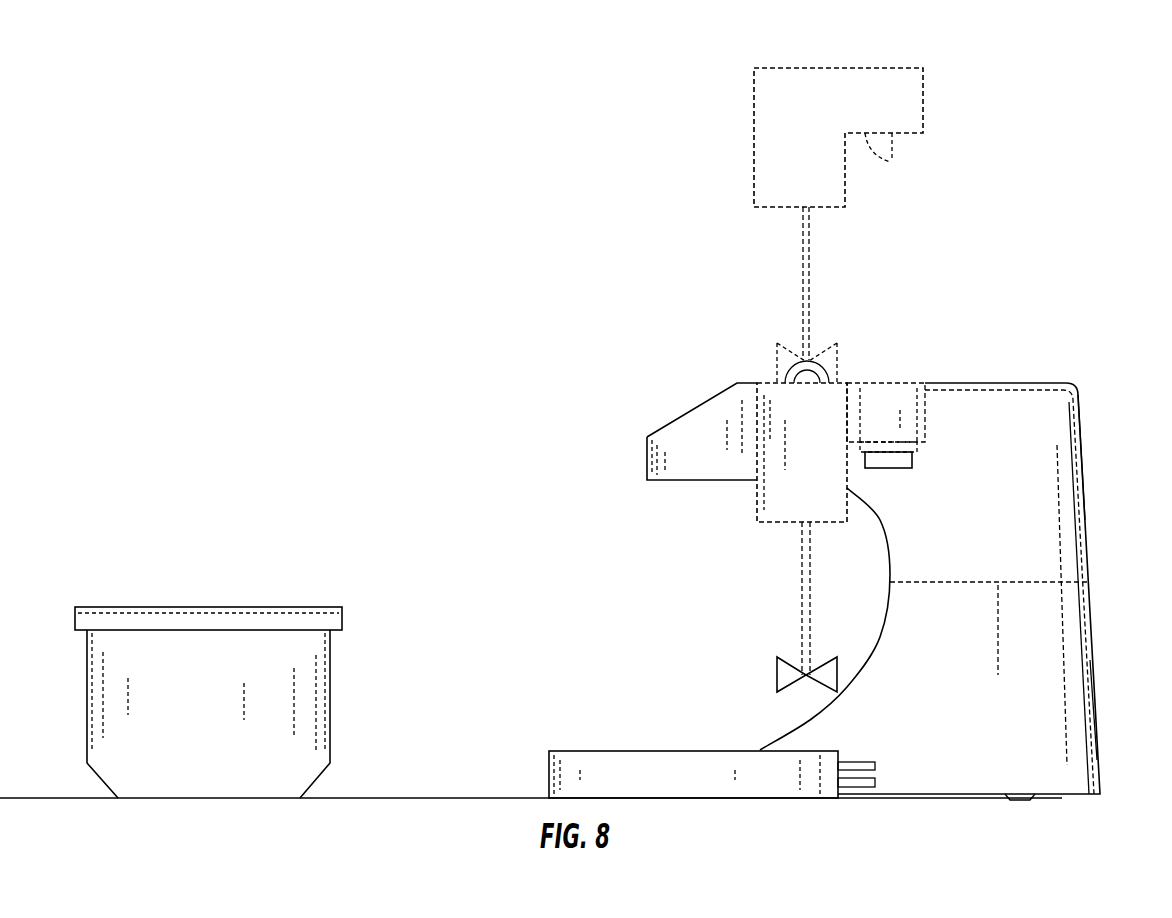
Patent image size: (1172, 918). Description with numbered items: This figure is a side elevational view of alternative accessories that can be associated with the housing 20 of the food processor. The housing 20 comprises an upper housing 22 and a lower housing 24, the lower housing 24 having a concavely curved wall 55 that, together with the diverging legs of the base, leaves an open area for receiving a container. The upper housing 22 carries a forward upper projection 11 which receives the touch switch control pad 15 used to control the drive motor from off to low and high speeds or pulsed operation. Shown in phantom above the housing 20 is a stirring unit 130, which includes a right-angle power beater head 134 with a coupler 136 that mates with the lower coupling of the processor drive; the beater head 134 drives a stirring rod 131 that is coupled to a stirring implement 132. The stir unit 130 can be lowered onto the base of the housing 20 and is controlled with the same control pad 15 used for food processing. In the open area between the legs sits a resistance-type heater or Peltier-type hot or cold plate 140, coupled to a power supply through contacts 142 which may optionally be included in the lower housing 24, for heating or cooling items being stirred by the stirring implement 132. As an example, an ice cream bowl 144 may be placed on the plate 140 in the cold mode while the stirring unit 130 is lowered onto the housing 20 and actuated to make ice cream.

The forward upper projection 11 is at (647, 460).
The touch switch control pad 15 is at (700, 405).
The housing 20 is at (1087, 505).
The upper housing 22 is at (1082, 430).
The lower housing 24 is at (1092, 660).
The concavely curved wall 55 is at (878, 640).
The stirring unit 130 is at (857, 66).
The stirring rod 131 is at (812, 285).
The stirring implement 132 is at (760, 345).
The right-angle power beater head 134 is at (870, 398).
The coupler 136 is at (890, 162).
The hot or cold plate 140 is at (548, 775).
The contacts 142 is at (875, 770).
The ice cream bowl 144 is at (332, 660).